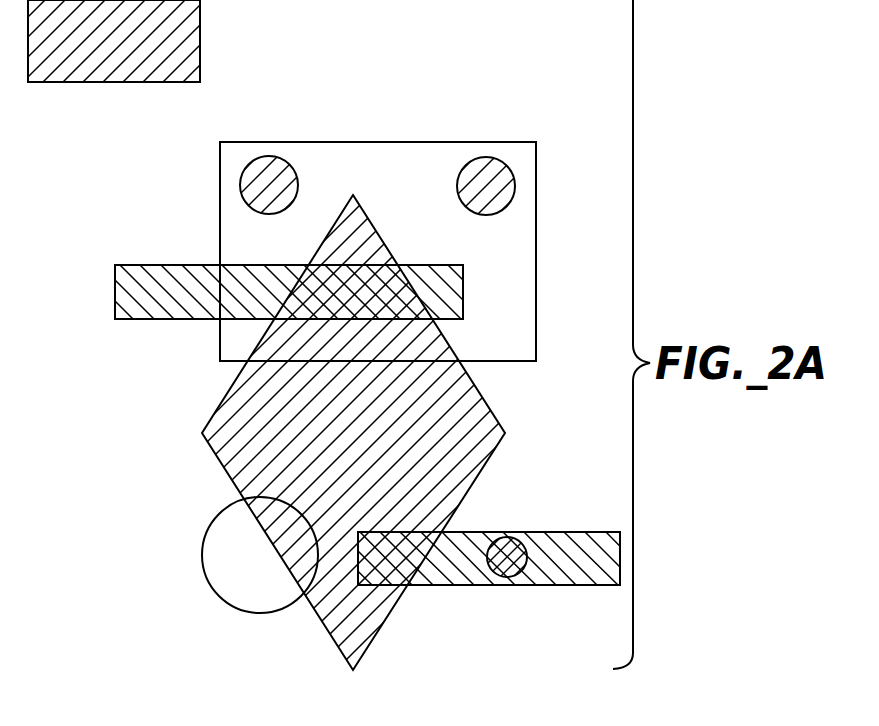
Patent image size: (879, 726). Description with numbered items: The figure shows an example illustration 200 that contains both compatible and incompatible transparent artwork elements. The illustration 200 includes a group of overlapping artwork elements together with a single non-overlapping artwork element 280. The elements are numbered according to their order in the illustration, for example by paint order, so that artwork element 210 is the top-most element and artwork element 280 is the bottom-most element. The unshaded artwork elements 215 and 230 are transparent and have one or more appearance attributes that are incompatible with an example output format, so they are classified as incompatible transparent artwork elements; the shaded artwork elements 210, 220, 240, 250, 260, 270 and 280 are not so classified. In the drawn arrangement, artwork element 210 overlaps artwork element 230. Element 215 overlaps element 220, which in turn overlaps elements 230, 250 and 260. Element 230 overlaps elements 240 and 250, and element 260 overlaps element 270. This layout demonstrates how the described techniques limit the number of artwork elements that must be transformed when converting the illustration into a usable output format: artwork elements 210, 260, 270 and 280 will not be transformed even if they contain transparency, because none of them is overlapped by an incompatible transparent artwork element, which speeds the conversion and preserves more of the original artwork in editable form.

The illustration 200 is at (124, 618).
The artwork element 210 is at (515, 186).
The artwork element 215 is at (208, 531).
The artwork element 220 is at (210, 421).
The artwork element 230 is at (390, 142).
The artwork element 240 is at (240, 185).
The artwork element 250 is at (185, 265).
The artwork element 260 is at (515, 532).
The artwork element 270 is at (497, 575).
The non-overlapping artwork element 280 is at (200, 42).